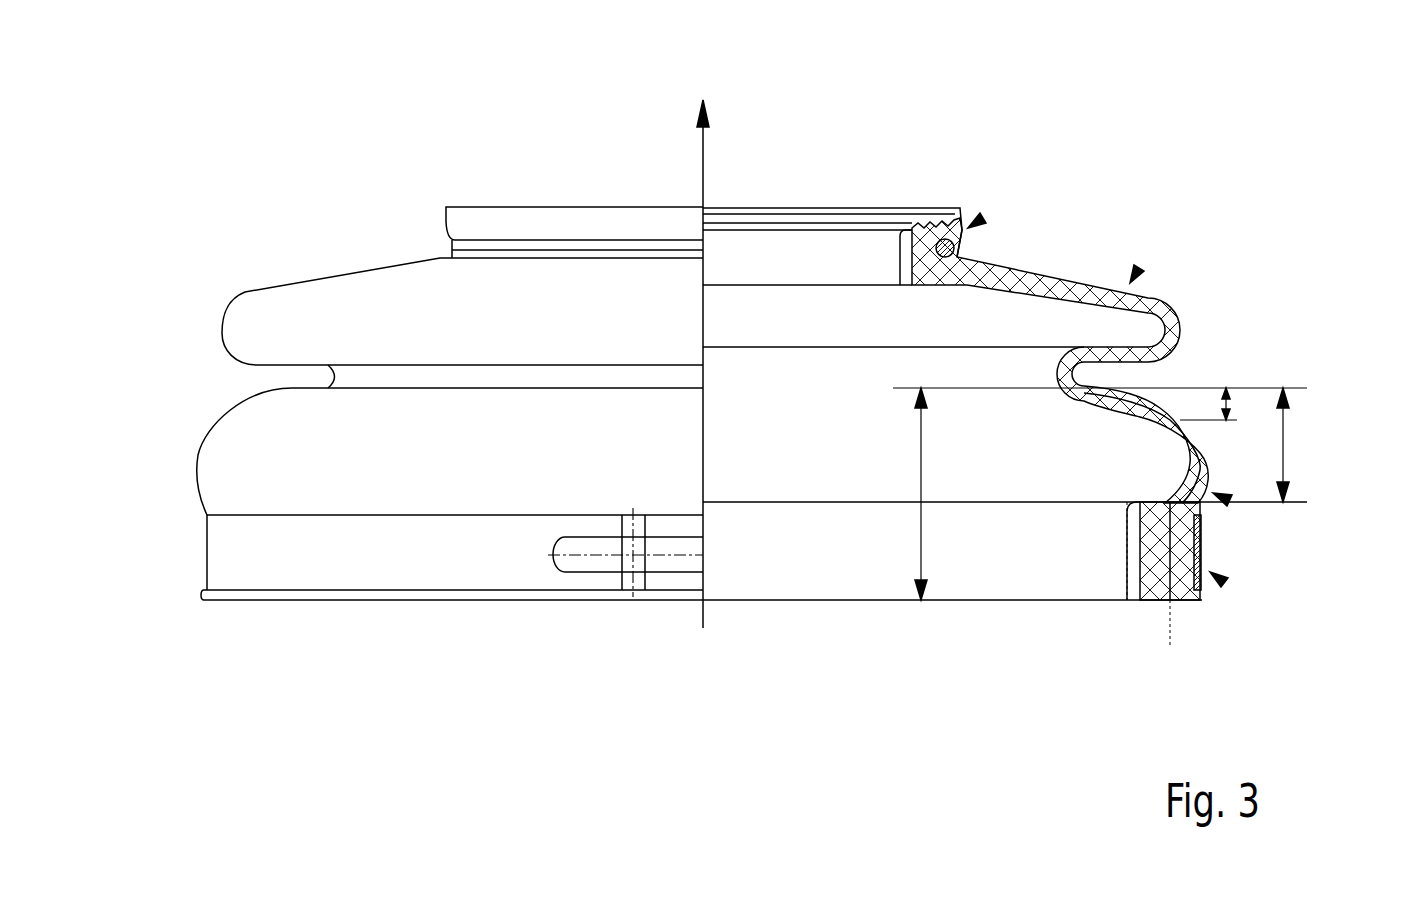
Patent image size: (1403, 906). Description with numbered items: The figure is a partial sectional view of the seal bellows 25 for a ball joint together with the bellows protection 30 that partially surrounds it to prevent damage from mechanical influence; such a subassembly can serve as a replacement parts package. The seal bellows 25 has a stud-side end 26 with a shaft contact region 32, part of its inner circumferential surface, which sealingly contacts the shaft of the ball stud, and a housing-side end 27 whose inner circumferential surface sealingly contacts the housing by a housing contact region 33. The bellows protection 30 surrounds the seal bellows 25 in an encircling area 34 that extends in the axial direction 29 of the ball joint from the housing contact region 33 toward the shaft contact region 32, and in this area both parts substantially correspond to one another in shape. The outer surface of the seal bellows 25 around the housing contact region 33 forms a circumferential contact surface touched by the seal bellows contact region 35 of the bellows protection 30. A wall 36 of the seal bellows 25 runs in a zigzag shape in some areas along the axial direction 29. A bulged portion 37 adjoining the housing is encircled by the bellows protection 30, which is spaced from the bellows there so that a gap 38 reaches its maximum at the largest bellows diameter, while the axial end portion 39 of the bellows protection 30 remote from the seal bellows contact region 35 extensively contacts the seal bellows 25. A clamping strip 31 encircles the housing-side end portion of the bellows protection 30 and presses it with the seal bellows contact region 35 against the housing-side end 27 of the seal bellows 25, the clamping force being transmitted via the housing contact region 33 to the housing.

The seal bellows 25 is at (1138, 270).
The stud-side end 26 is at (983, 220).
The housing-side end 27 is at (1225, 600).
The axial direction 29 is at (700, 157).
The bellows protection 30 is at (1208, 535).
The clamping strip 31 is at (1222, 580).
The shaft contact region 32 is at (897, 258).
The housing contact region 33 is at (1127, 550).
The encircling area 34 is at (919, 476).
The seal bellows contact region 35 is at (1171, 638).
The wall 36 is at (1181, 330).
The bulged portion 37 is at (1285, 447).
The gap 38 is at (1225, 500).
The axial end portion 39 is at (1247, 387).